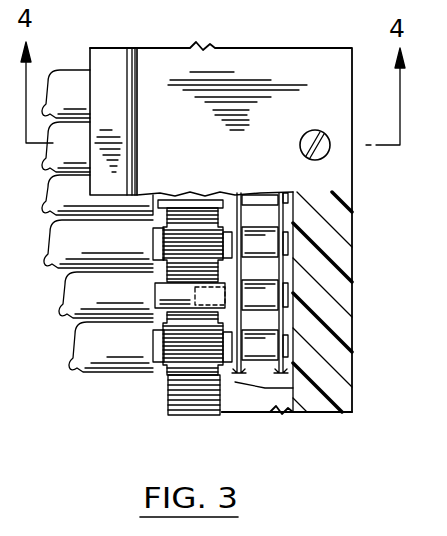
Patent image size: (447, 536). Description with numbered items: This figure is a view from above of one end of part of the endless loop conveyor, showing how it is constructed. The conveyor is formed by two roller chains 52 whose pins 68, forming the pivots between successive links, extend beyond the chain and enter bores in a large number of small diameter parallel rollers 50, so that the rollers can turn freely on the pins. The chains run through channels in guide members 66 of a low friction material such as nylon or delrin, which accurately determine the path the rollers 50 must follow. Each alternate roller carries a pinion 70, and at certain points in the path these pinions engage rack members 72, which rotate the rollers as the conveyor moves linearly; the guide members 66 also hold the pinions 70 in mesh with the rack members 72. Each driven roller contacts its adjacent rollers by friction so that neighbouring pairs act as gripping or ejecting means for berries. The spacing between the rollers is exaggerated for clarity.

The rollers 50 is at (97, 362).
The roller chains 52 is at (279, 322).
The guide members 66 is at (337, 292).
The pins 68 is at (208, 287).
The pinion 70 is at (178, 363).
The rack members 72 is at (210, 400).